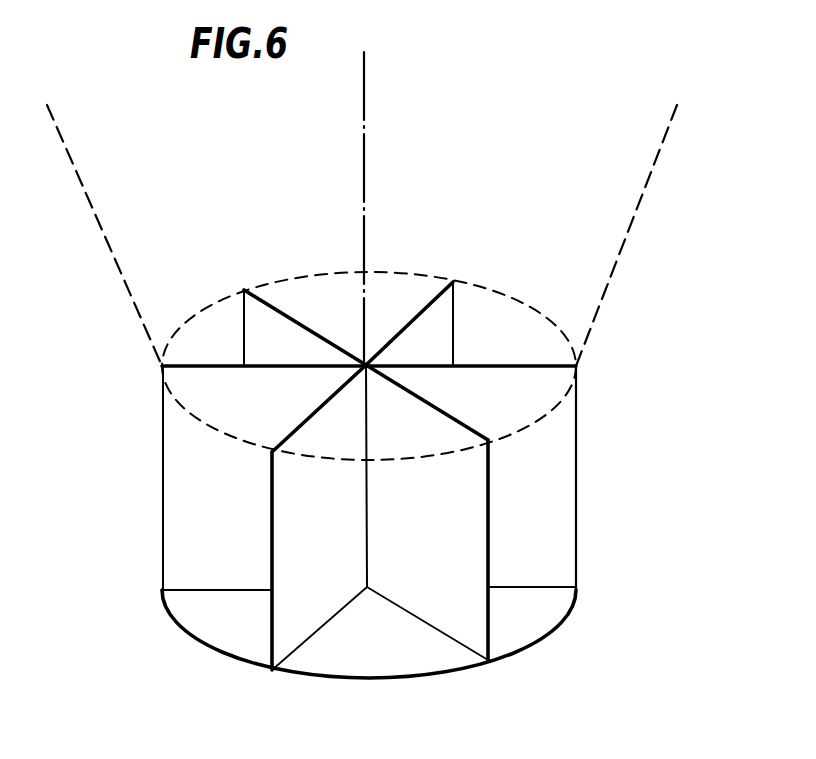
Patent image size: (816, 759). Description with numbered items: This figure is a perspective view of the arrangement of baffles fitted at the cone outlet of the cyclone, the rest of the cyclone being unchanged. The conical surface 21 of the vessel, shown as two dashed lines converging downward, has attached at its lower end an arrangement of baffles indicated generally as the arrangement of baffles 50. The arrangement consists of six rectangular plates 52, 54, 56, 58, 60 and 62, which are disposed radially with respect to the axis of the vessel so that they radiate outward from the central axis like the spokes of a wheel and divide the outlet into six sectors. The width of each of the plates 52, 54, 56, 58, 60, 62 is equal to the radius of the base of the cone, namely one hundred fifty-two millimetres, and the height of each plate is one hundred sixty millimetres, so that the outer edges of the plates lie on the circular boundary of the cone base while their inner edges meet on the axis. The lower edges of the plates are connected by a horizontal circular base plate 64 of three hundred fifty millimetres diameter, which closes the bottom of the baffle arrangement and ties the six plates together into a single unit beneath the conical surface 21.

The conical surface 21 is at (625, 252).
The arrangement of baffles 50 is at (587, 502).
The rectangular plate 52 is at (550, 565).
The rectangular plate 54 is at (440, 330).
The rectangular plate 56 is at (280, 334).
The rectangular plate 58 is at (190, 527).
The rectangular plate 60 is at (287, 623).
The rectangular plate 62 is at (473, 607).
The horizontal circular base plate 64 is at (388, 658).